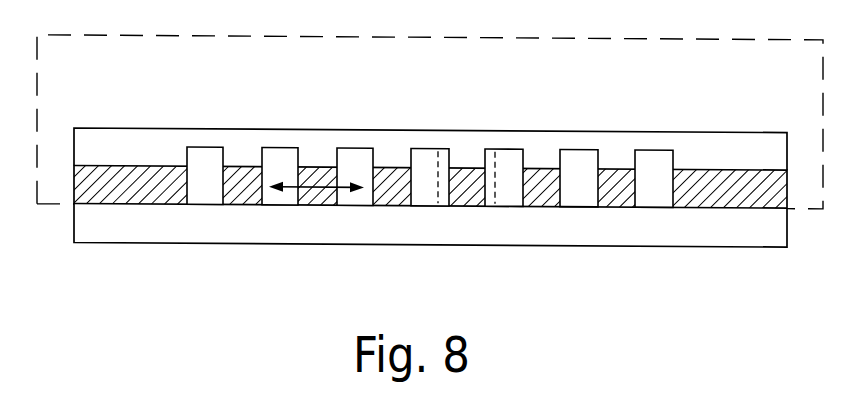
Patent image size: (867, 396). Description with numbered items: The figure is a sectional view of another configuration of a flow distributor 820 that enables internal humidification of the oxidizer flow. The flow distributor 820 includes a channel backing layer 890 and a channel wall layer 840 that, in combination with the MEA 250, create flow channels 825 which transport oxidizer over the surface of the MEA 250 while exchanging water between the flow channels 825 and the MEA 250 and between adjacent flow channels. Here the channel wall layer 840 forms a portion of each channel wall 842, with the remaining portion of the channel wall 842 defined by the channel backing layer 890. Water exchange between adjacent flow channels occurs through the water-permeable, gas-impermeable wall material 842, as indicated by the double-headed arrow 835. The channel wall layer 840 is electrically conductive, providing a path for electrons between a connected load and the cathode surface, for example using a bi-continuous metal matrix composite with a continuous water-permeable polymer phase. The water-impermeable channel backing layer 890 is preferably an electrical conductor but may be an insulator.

The flow distributor 820 is at (115, 78).
The channel backing layer 890 is at (132, 158).
The MEA 250 is at (131, 238).
The double-headed arrow 835 is at (318, 185).
The channel wall 842 is at (472, 147).
The flow channel 825 is at (205, 189).
The channel wall layer 840 is at (727, 208).